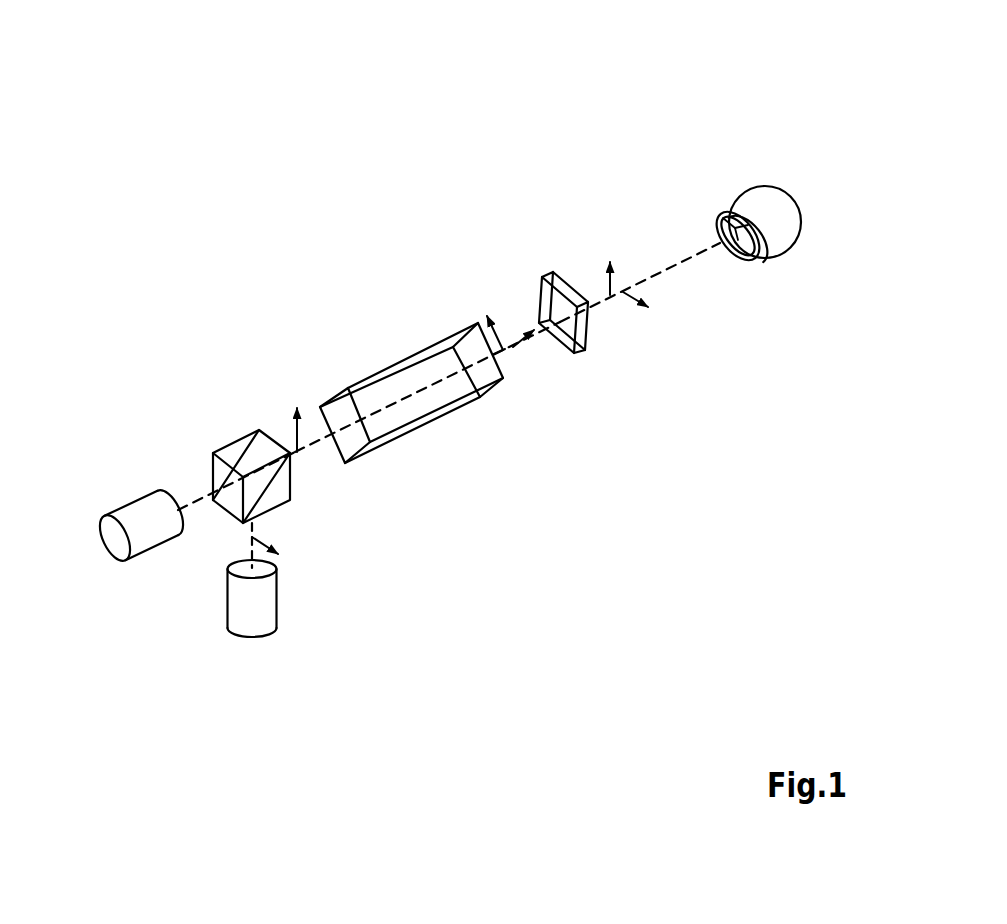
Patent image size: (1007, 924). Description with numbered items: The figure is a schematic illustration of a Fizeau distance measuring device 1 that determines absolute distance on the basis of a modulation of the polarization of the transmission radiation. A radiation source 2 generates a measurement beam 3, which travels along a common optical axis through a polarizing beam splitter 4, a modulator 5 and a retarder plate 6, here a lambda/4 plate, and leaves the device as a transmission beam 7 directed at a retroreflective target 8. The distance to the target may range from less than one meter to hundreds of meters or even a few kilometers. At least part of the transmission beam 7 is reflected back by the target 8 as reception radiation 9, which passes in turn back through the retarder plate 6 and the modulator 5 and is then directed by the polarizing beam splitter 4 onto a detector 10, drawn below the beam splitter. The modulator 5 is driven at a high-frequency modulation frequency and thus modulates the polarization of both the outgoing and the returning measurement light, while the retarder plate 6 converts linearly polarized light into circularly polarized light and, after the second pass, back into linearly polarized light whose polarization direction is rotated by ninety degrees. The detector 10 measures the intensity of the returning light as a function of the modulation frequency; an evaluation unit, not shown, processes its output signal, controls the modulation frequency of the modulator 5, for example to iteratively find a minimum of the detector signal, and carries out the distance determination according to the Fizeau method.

The Fizeau distance measuring device 1 is at (342, 292).
The radiation source 2 is at (117, 470).
The measurement beam 3 is at (429, 313).
The polarizing beam splitter 4 is at (166, 399).
The modulator 5 is at (616, 459).
The retarder plate 6 is at (725, 379).
The transmission beam 7 is at (427, 387).
The retroreflective target 8 is at (811, 187).
The reception radiation 9 is at (640, 282).
The detector 10 is at (169, 639).